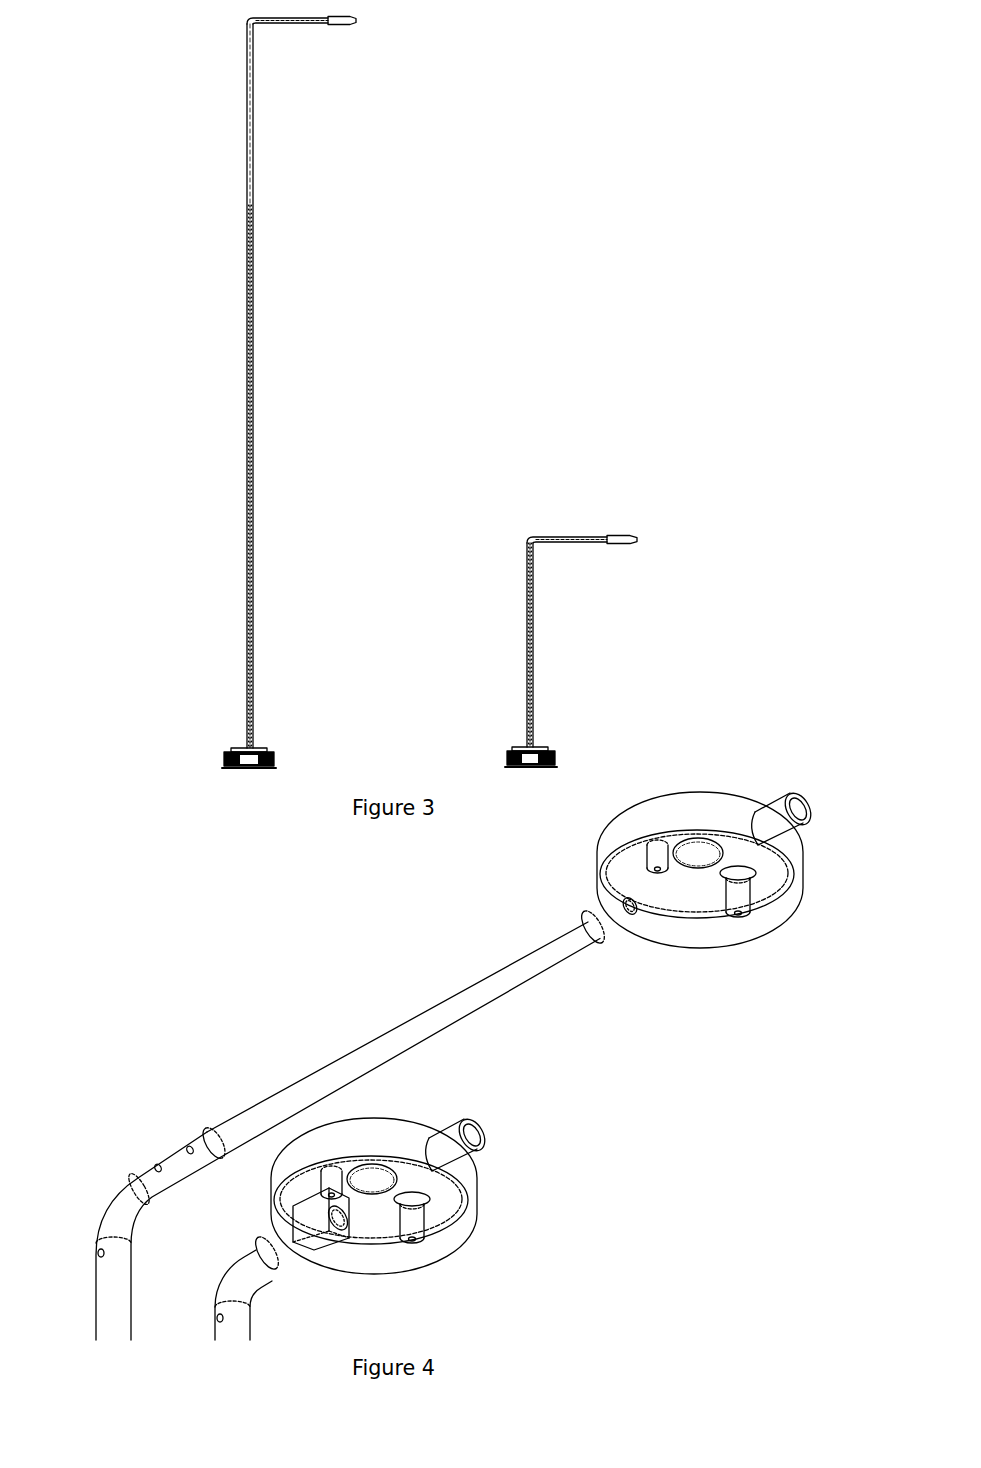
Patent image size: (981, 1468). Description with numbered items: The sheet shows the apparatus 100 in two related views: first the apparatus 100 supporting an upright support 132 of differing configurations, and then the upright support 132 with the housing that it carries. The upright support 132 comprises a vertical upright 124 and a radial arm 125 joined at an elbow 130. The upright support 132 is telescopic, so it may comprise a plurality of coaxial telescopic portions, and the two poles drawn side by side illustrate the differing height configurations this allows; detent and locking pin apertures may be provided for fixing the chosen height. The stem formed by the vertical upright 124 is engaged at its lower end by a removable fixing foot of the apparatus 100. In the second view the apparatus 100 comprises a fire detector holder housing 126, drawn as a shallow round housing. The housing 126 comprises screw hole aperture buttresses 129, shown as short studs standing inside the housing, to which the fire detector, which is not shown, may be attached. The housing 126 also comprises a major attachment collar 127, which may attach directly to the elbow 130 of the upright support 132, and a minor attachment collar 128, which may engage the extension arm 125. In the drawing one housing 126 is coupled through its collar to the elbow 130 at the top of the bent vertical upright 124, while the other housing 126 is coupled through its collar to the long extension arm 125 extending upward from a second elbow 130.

In FIG. 3, the apparatus 100 is at (306, 701).
In FIG. 3, the vertical upright 124 is at (250, 412).
In FIG. 3, the radial arm 125 is at (287, 24).
In FIG. 4, the radial arm 125 is at (372, 1041).
In FIG. 3, the fire detector holder housing 126 is at (356, 20).
In FIG. 4, the fire detector holder housing 126 is at (802, 882).
In FIG. 4, the major attachment collar 127 is at (800, 792).
In FIG. 4, the minor attachment collar 128 is at (592, 913).
In FIG. 4, the screw hole aperture buttresses 129 is at (740, 914).
In FIG. 4, the elbow 130 is at (110, 1197).
In FIG. 3, the upright support 132 is at (188, 157).